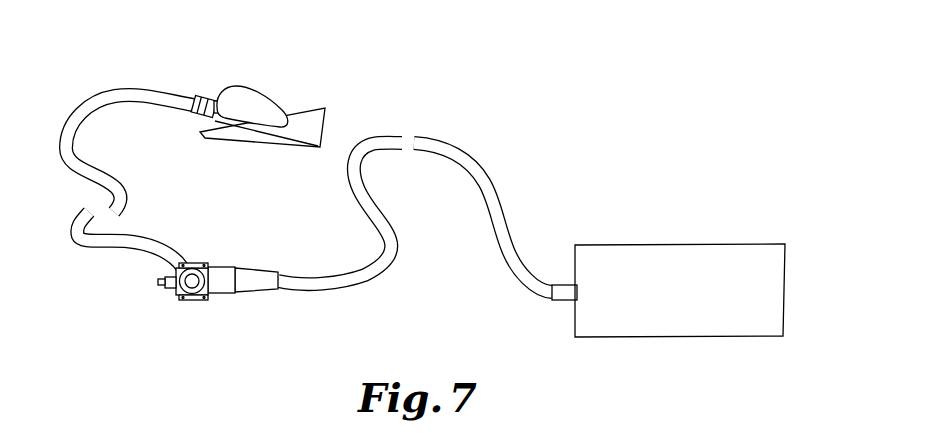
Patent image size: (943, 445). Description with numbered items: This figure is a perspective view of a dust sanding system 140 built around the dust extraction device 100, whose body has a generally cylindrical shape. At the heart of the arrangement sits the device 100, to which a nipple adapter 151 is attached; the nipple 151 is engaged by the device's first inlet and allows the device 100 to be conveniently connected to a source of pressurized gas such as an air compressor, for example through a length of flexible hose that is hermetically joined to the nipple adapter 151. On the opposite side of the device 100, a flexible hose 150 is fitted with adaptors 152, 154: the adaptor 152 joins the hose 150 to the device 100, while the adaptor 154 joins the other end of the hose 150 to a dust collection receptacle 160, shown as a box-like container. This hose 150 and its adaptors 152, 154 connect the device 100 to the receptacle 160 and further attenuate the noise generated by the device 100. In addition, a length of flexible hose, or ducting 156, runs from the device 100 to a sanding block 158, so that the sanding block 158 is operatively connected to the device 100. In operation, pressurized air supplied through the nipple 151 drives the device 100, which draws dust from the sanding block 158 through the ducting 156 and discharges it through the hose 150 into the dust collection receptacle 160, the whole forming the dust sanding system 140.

The dust extraction device 100 is at (223, 287).
The dust sanding system 140 is at (597, 64).
The flexible hose 150 is at (490, 178).
The nipple adapter 151 is at (160, 288).
The adaptor 152 is at (255, 278).
The adaptor 154 is at (567, 292).
The ducting 156 is at (98, 240).
The sanding block 158 is at (255, 100).
The dust collection receptacle 160 is at (693, 253).